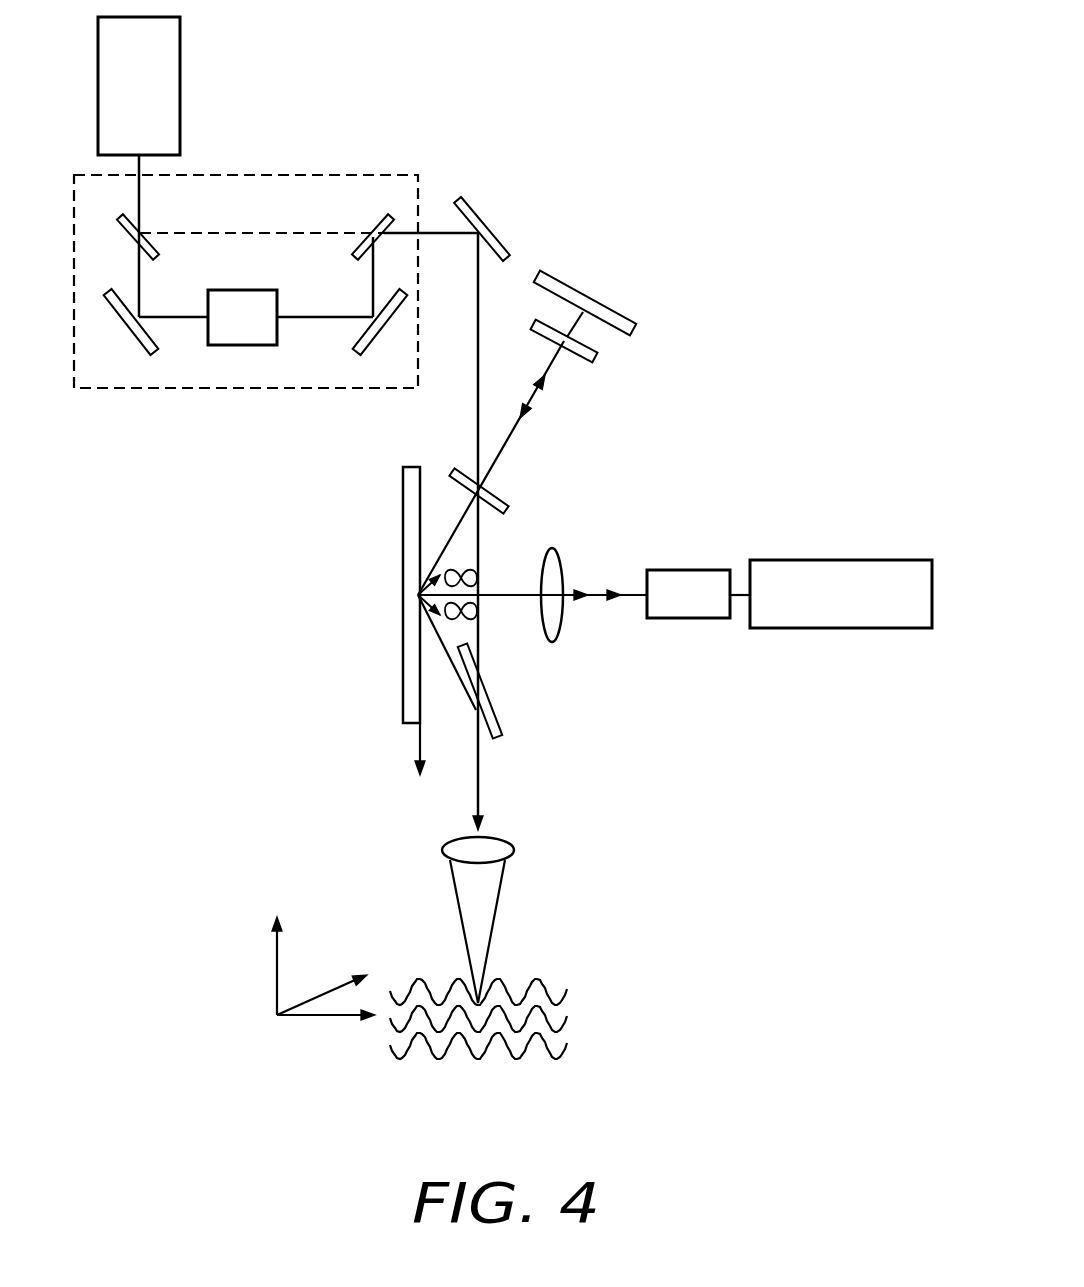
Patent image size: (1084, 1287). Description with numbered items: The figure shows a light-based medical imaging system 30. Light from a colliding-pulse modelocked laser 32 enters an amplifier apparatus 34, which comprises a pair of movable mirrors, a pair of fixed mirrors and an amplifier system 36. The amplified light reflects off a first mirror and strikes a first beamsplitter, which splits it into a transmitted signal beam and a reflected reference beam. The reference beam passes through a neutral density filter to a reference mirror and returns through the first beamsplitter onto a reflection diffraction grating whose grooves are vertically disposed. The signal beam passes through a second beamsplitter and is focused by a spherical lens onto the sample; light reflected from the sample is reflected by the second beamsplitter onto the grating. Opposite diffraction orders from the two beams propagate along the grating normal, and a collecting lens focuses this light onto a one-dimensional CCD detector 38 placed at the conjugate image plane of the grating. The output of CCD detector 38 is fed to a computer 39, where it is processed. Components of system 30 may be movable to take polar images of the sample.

The light-based medical imaging system 30 is at (762, 423).
The colliding-pulse modelocked laser 32 is at (182, 57).
The amplifier apparatus 34 is at (158, 389).
The amplifier system 36 is at (240, 346).
The CCD detector 38 is at (688, 570).
The computer 39 is at (870, 559).